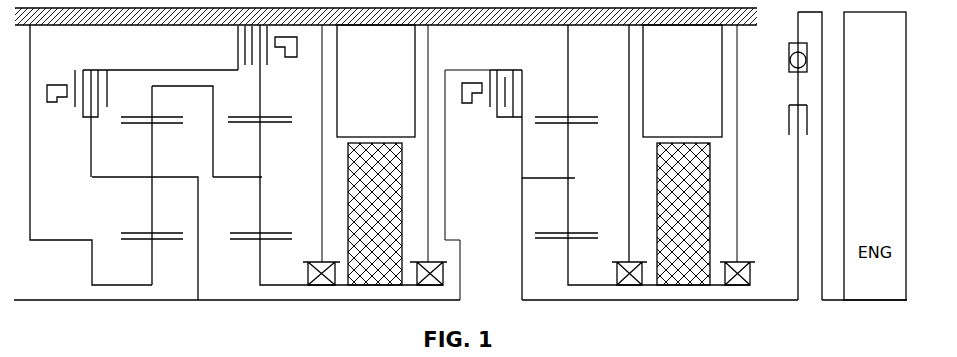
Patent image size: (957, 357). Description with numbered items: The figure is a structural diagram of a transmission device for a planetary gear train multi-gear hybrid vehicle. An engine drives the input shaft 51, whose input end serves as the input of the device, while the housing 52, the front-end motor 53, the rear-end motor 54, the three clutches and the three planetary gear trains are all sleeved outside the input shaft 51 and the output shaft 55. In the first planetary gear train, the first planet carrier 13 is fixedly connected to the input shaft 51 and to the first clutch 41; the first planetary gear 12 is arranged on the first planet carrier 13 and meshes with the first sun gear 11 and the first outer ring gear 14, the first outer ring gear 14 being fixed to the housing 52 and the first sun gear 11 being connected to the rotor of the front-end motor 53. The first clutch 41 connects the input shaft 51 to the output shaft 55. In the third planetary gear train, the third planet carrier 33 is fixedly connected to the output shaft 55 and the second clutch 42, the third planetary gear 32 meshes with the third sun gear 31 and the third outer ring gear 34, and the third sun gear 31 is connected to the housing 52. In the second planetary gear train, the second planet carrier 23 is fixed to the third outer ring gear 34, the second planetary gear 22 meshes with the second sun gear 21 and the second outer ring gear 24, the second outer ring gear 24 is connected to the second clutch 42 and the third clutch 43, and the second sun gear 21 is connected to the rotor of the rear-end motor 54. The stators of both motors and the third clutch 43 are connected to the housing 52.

The first sun gear 11 is at (550, 254).
The first planetary gear 12 is at (550, 198).
The first planet carrier 13 is at (536, 162).
The first outer ring gear 14 is at (550, 84).
The second sun gear 21 is at (242, 252).
The second planetary gear 22 is at (242, 198).
The second planet carrier 23 is at (228, 160).
The second outer ring gear 24 is at (242, 86).
The third sun gear 31 is at (134, 252).
The third planetary gear 32 is at (134, 198).
The third planet carrier 33 is at (168, 160).
The third outer ring gear 34 is at (136, 84).
The first clutch 41 is at (490, 52).
The second clutch 42 is at (74, 52).
The third clutch 43 is at (218, 38).
The input shaft 51 is at (768, 284).
The housing 52 is at (590, 42).
The front-end motor 53 is at (674, 120).
The rear-end motor 54 is at (366, 120).
The output shaft 55 is at (20, 284).